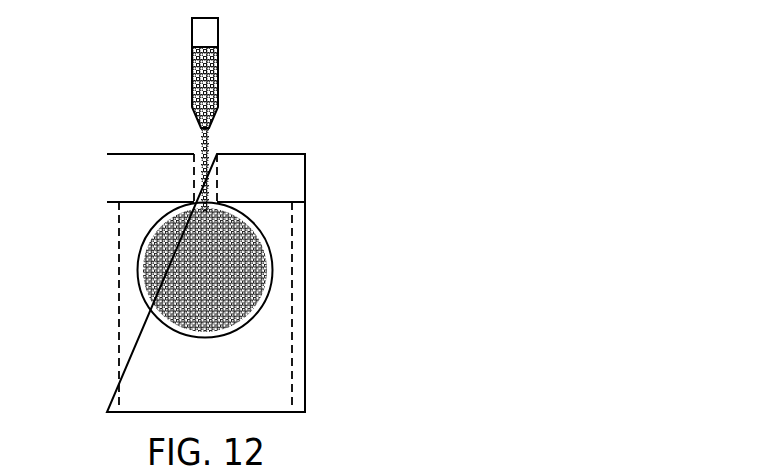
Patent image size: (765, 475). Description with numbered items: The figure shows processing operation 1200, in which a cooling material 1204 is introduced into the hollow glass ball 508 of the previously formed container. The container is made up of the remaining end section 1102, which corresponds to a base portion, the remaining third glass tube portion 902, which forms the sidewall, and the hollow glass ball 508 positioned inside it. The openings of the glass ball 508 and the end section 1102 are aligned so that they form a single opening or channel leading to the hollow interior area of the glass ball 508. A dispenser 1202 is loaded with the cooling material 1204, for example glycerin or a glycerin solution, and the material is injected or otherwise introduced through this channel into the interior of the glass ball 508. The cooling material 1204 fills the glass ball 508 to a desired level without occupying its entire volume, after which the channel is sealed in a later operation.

The processing operation 1200 is at (362, 55).
The dispenser 1202 is at (192, 38).
The cooling material 1204 is at (152, 253).
The end section 1102 is at (305, 180).
The hollow glass ball 508 is at (272, 257).
The third glass tube portion 902 is at (305, 355).